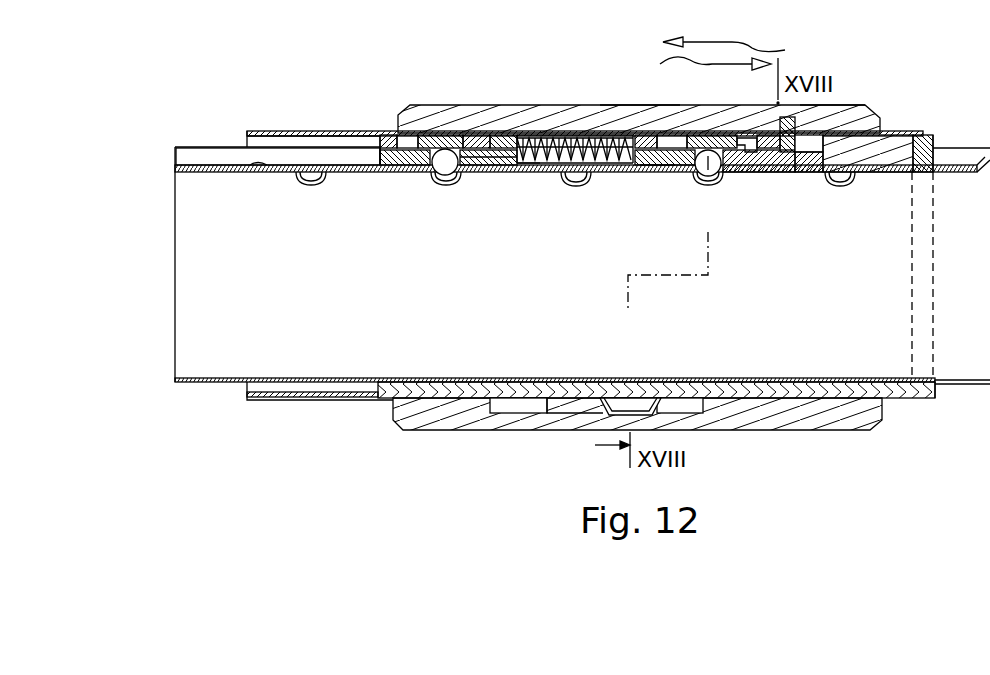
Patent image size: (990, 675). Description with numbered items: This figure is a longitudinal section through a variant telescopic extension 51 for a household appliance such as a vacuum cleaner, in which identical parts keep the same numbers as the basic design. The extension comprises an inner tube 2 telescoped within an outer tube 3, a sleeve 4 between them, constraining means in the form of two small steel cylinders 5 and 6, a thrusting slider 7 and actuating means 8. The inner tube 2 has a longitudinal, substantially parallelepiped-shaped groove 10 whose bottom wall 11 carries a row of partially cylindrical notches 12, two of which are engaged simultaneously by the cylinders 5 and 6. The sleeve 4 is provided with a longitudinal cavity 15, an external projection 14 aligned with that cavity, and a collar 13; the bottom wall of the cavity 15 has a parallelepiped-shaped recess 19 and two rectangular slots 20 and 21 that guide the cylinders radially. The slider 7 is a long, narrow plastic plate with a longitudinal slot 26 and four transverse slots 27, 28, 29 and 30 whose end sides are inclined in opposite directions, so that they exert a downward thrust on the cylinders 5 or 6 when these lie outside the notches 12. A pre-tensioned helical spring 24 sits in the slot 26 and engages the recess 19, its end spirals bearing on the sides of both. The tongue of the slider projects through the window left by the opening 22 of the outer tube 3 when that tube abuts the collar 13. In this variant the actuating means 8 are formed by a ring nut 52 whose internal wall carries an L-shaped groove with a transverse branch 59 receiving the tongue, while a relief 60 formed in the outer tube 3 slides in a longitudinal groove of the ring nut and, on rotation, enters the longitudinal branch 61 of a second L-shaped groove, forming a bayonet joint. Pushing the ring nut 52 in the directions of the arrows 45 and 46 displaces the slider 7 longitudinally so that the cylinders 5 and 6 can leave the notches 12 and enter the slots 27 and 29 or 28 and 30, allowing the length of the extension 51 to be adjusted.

The inner tube 2 is at (213, 143).
The outer tube 3 is at (339, 126).
The sleeve 4 is at (657, 168).
The constraining means 5 is at (447, 176).
The constraining means 6 is at (713, 177).
The thrusting slider 7 is at (803, 150).
The actuating means 8 is at (862, 100).
The groove 10 is at (352, 158).
The bottom wall 11 is at (240, 172).
The notches 12 is at (318, 184).
The collar 13 is at (933, 132).
The external projection 14 is at (900, 133).
The longitudinal cavity 15 is at (812, 164).
The recess 19 is at (523, 168).
The rectangular slot 20 is at (482, 168).
The rectangular slot 21 is at (692, 176).
The opening 22 is at (888, 120).
The helical spring 24 is at (540, 136).
The slot 26 is at (567, 136).
The slot 27 is at (410, 143).
The slot 28 is at (488, 141).
The slot 29 is at (668, 142).
The slot 30 is at (742, 152).
The arrow 45 is at (700, 58).
The arrow 46 is at (744, 51).
The telescopic extension 51 is at (636, 94).
The ring nut 52 is at (838, 108).
The transverse branch 59 is at (777, 133).
The relief 60 is at (697, 430).
The longitudinal branch 61 is at (573, 407).